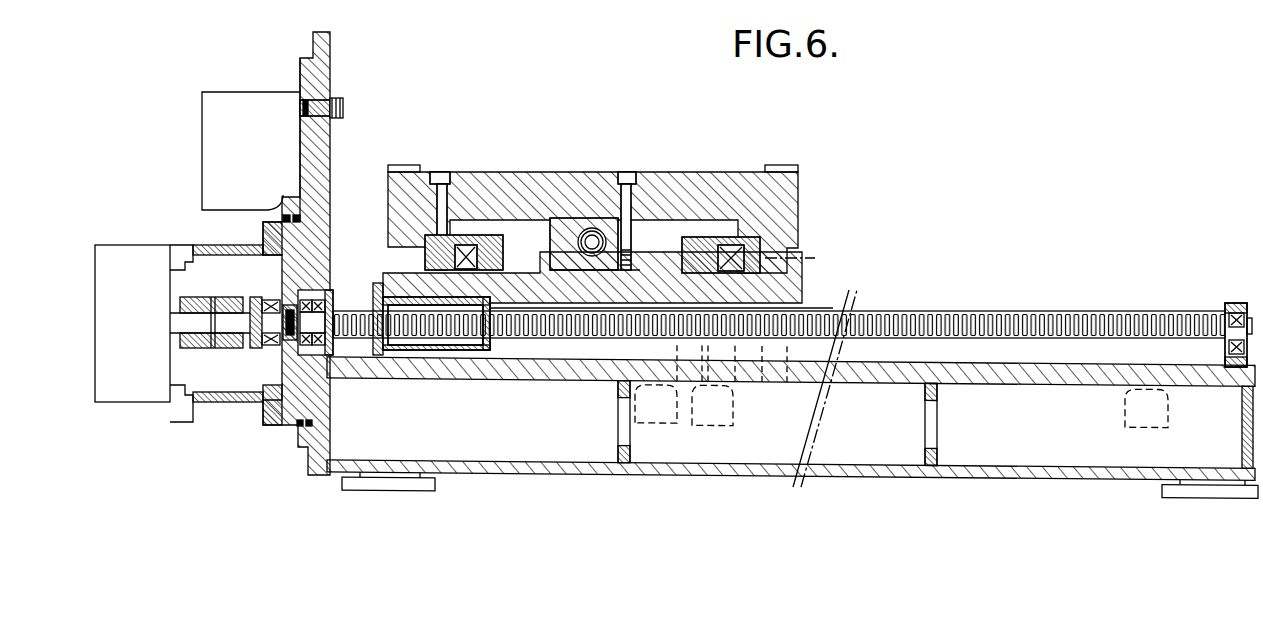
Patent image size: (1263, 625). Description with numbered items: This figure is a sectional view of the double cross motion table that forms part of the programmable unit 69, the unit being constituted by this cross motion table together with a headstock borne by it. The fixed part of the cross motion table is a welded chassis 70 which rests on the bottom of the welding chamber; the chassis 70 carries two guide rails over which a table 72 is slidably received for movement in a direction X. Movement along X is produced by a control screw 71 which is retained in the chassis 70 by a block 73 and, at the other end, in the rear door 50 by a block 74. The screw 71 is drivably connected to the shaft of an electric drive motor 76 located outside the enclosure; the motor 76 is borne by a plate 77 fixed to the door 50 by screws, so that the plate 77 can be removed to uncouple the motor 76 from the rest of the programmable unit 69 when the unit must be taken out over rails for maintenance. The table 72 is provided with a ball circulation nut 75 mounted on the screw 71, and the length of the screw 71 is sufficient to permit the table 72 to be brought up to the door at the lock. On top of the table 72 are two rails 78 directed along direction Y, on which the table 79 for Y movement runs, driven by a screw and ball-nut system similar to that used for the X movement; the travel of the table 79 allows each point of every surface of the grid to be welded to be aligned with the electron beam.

The rear door 50 is at (320, 58).
The programmable unit 69 is at (848, 198).
The welded chassis 70 is at (852, 473).
The control screw 71 is at (946, 322).
The table 72 is at (782, 293).
The block 73 is at (1238, 303).
The block 74 is at (262, 400).
The ball circulation nut 75 is at (452, 338).
The electric drive motor 76 is at (143, 345).
The plate 77 is at (310, 257).
The rails 78 is at (427, 247).
The table for Y movement 79 is at (537, 183).